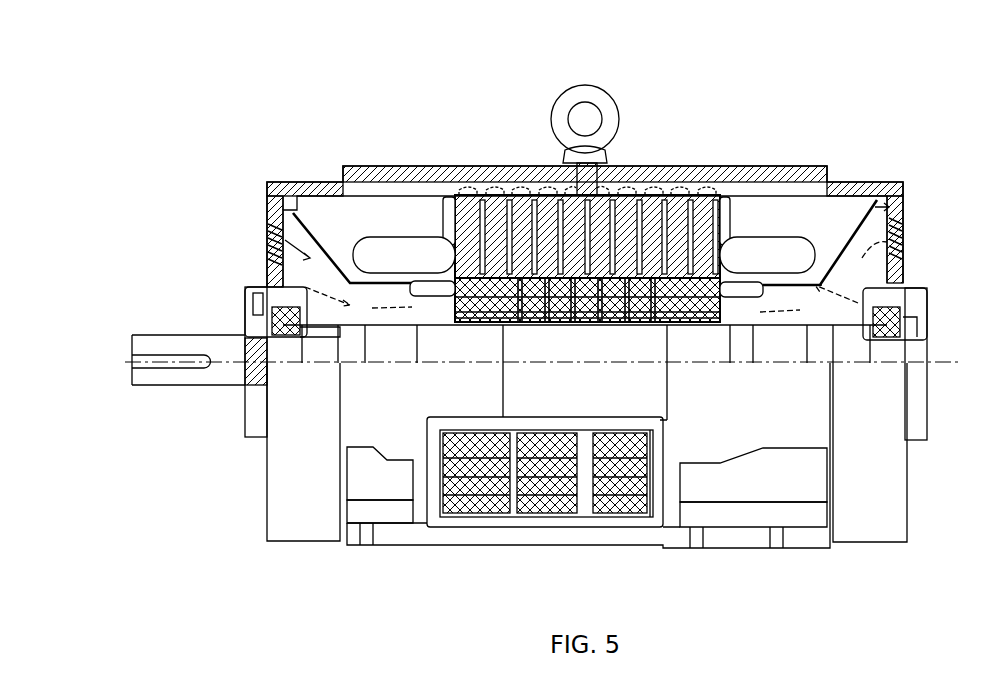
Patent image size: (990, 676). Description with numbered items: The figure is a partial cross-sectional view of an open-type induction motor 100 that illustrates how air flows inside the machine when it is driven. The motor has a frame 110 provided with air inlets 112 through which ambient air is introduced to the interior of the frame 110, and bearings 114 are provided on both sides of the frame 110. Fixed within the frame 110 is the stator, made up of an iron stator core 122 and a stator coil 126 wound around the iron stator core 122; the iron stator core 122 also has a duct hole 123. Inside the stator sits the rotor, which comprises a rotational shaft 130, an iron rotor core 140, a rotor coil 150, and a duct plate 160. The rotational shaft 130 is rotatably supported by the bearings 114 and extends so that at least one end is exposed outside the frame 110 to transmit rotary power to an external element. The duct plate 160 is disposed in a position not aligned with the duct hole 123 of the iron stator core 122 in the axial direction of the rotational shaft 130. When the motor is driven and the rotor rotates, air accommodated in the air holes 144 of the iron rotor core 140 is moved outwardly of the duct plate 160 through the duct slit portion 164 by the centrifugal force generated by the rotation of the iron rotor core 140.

The open-type induction motor 100 is at (569, 81).
The frame 110 is at (297, 182).
The air inlet 112 is at (266, 236).
The bearing 114 is at (900, 318).
The iron stator core 122 is at (458, 202).
The duct hole 123 is at (448, 198).
The stator coil 126 is at (377, 237).
The rotational shaft 130 is at (439, 209).
The iron rotor core 140 is at (582, 323).
The air hole 144 is at (600, 323).
The rotor coil 150 is at (750, 323).
The duct plate 160 is at (196, 102).
The duct slit portion 164 is at (557, 323).